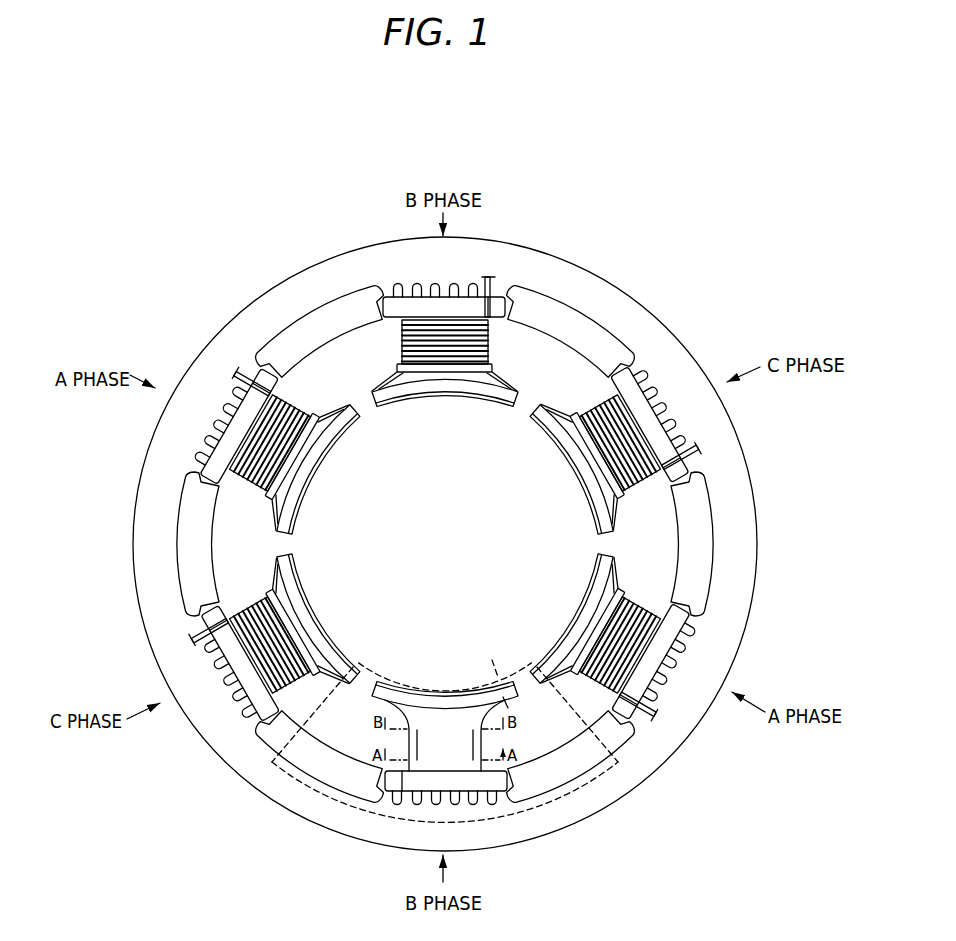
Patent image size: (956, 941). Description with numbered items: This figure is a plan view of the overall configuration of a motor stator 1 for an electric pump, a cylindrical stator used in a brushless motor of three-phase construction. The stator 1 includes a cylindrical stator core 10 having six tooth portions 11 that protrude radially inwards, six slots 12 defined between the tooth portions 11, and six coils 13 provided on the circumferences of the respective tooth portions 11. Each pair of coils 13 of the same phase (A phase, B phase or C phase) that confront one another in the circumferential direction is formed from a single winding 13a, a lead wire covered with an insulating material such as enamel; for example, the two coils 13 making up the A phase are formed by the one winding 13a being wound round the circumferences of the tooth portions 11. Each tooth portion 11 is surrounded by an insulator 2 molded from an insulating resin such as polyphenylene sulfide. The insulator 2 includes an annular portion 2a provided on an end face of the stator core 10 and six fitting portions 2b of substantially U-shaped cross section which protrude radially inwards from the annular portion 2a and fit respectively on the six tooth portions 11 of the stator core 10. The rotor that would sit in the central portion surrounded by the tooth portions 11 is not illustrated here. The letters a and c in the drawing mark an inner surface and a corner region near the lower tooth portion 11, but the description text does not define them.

The motor stator 1 is at (445, 537).
The stator core 10 is at (628, 290).
The insulator 2 is at (537, 286).
The annular portion 2a is at (707, 507).
The fitting portion 2b is at (440, 387).
The tooth portion 11 is at (307, 472).
The slot 12 is at (352, 387).
The coil 13 is at (290, 403).
The winding 13a is at (243, 473).
The inner circumferential surface a is at (407, 683).
The corner portion c is at (492, 660).